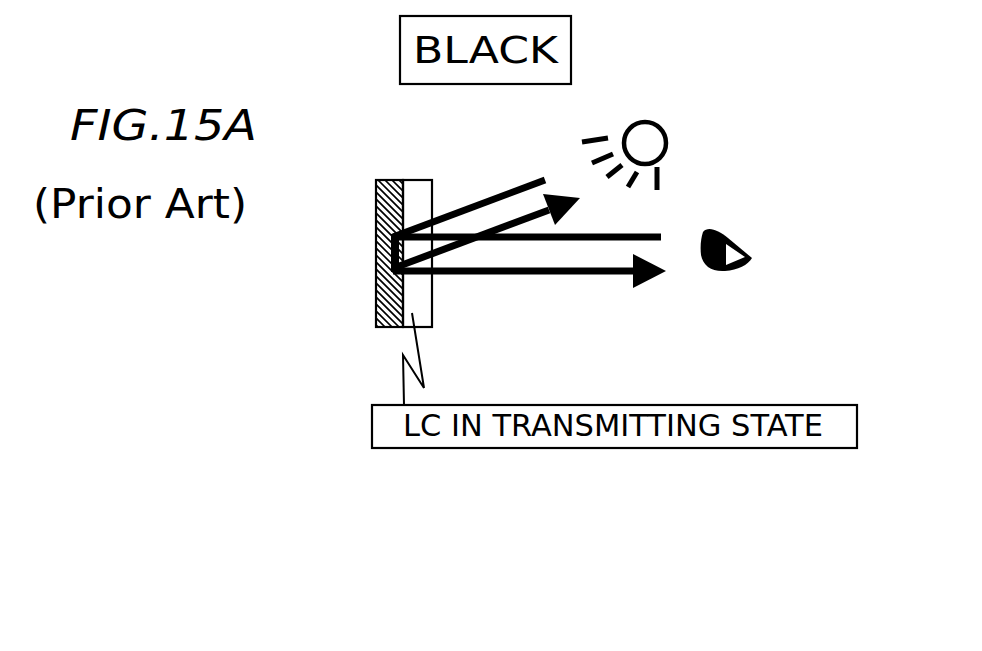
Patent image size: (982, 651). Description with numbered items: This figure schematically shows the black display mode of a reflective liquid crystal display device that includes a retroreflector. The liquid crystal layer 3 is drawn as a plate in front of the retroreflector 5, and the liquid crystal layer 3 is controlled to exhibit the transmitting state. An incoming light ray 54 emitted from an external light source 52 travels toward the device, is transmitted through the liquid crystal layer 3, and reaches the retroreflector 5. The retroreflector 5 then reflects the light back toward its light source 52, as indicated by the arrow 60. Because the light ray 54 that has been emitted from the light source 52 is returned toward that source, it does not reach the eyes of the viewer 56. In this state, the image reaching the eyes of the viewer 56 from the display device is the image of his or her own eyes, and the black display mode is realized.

The liquid crystal layer 3 is at (430, 192).
The retroreflector 5 is at (397, 180).
The external light source 52 is at (645, 138).
The incoming light ray 54 is at (493, 200).
The viewer 56 is at (743, 275).
The arrow 60 is at (460, 240).